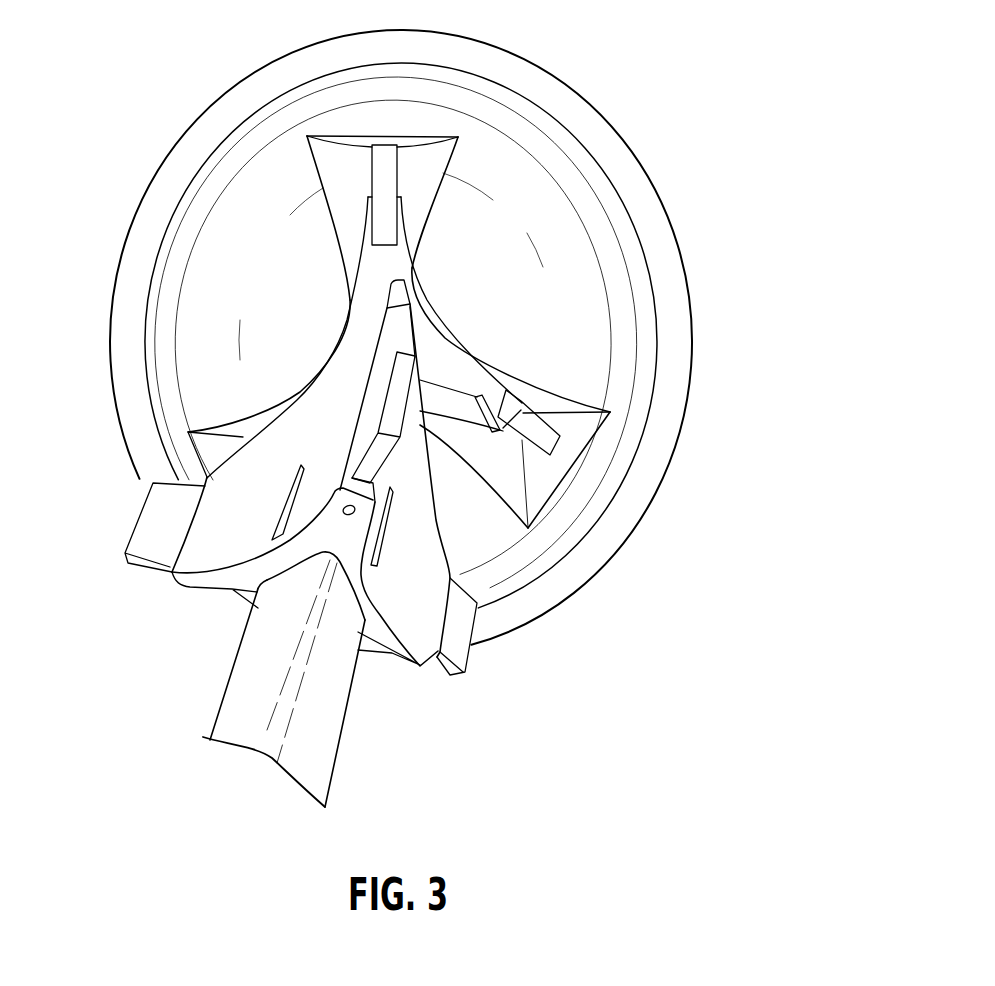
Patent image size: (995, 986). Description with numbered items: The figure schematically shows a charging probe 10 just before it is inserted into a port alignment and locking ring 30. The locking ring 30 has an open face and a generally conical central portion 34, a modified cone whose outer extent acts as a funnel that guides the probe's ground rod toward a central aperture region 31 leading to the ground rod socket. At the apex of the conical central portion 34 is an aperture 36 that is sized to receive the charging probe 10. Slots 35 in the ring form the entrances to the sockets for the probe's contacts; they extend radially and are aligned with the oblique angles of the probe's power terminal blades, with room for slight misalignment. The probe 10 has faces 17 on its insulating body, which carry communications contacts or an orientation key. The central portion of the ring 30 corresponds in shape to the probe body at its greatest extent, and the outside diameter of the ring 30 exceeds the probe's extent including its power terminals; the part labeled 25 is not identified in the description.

The charging probe 10 is at (320, 424).
The bottom face 17 is at (228, 528).
The handle 25 is at (470, 662).
The locking ring 30 is at (115, 388).
The central aperture region 31 is at (390, 272).
The conical central portion 34 is at (207, 293).
The slots 35 is at (390, 220).
The aperture 36 is at (387, 218).